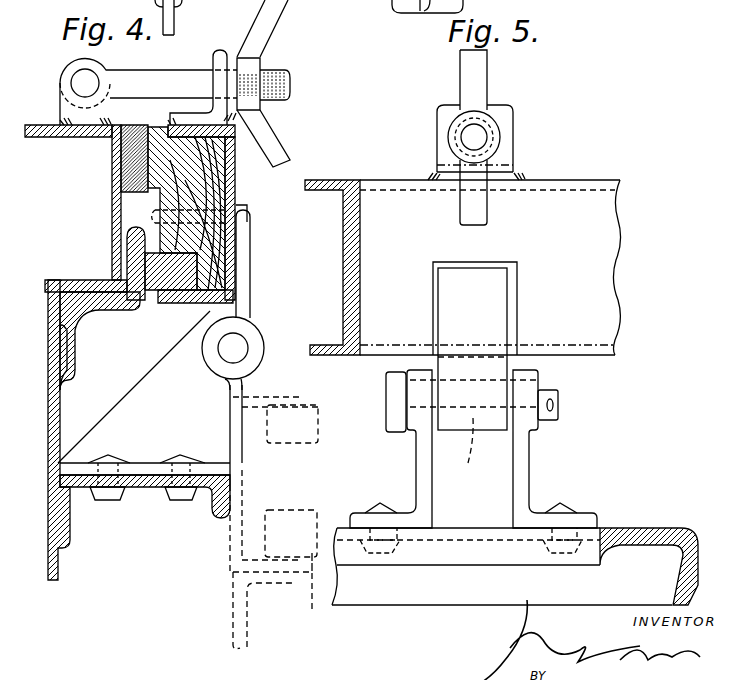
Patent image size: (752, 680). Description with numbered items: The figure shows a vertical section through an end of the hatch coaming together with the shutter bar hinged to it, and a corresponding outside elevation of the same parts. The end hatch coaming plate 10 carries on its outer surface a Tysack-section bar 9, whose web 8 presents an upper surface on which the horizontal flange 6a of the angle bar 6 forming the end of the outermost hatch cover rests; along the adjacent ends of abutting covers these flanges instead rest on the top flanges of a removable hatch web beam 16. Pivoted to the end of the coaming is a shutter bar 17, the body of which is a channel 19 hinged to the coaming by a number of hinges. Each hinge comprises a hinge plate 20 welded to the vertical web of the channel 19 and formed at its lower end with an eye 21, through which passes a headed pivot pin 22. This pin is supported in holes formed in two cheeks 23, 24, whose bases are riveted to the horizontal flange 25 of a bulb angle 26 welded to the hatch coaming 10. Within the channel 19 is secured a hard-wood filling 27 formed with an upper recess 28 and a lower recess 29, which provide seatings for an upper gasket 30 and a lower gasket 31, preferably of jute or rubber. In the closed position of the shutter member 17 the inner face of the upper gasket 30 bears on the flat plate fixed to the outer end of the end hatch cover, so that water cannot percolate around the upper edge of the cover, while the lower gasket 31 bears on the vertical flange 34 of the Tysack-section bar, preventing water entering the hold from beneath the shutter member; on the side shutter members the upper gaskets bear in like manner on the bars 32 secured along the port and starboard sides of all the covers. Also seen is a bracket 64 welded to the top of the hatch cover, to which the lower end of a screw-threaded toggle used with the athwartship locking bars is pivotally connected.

In FIG. 4, the angle bar 6 is at (111, 200).
In FIG. 4, the horizontal flange 6a is at (85, 290).
In FIG. 4, the web 8 is at (100, 300).
In FIG. 4, the Tysack-section bar 9 is at (67, 330).
In FIG. 4, the end hatch coaming plate 10 is at (57, 412).
In FIG. 4, the removable hatch web beam 16 is at (177, 25).
In FIG. 4, the shutter bar 17 is at (263, 389).
In FIG. 4, the channel 19 is at (231, 188).
In FIG. 5, the channel 19 is at (577, 247).
In FIG. 4, the hinge plate 20 is at (246, 276).
In FIG. 5, the hinge plate 20 is at (480, 325).
In FIG. 4, the eye 21 is at (247, 343).
In FIG. 5, the eye 21 is at (476, 267).
In FIG. 4, the headed pivot pin 22 is at (235, 352).
In FIG. 5, the headed pivot pin 22 is at (557, 418).
In FIG. 4, the cheek 23 is at (173, 407).
In FIG. 5, the cheek 23 is at (431, 470).
In FIG. 5, the cheek 24 is at (518, 473).
In FIG. 4, the horizontal flange 25 is at (138, 480).
In FIG. 5, the horizontal flange 25 is at (603, 545).
In FIG. 4, the bulb angle 26 is at (145, 505).
In FIG. 5, the bulb angle 26 is at (663, 568).
In FIG. 4, the hard-wood filling 27 is at (205, 238).
In FIG. 4, the upper recess 28 is at (239, 170).
In FIG. 4, the lower recess 29 is at (205, 288).
In FIG. 4, the upper gasket 30 is at (231, 135).
In FIG. 4, the lower gasket 31 is at (154, 272).
In FIG. 4, the bar 32 is at (135, 125).
In FIG. 4, the vertical flange 34 is at (135, 243).
In FIG. 5, the bracket 64 is at (418, 8).